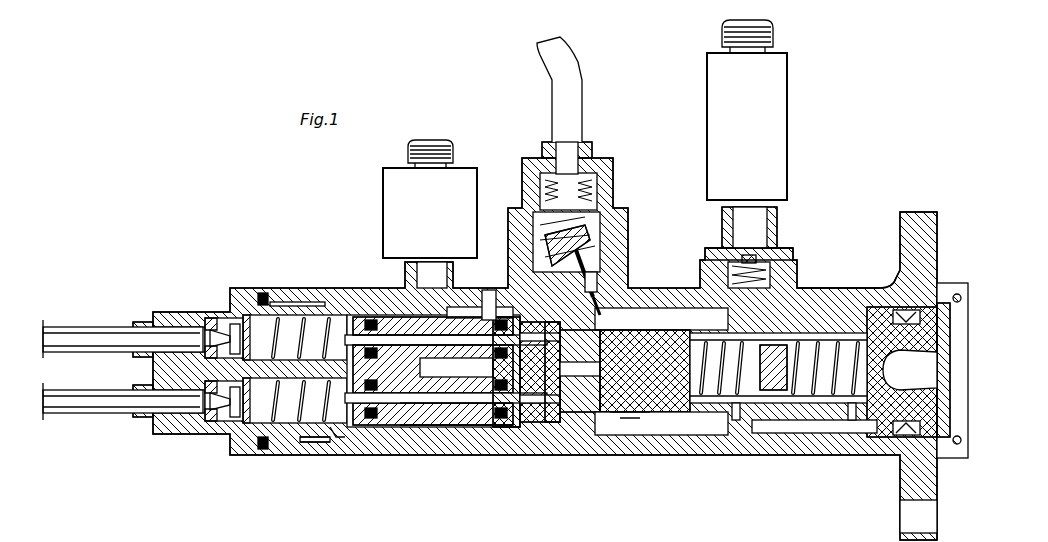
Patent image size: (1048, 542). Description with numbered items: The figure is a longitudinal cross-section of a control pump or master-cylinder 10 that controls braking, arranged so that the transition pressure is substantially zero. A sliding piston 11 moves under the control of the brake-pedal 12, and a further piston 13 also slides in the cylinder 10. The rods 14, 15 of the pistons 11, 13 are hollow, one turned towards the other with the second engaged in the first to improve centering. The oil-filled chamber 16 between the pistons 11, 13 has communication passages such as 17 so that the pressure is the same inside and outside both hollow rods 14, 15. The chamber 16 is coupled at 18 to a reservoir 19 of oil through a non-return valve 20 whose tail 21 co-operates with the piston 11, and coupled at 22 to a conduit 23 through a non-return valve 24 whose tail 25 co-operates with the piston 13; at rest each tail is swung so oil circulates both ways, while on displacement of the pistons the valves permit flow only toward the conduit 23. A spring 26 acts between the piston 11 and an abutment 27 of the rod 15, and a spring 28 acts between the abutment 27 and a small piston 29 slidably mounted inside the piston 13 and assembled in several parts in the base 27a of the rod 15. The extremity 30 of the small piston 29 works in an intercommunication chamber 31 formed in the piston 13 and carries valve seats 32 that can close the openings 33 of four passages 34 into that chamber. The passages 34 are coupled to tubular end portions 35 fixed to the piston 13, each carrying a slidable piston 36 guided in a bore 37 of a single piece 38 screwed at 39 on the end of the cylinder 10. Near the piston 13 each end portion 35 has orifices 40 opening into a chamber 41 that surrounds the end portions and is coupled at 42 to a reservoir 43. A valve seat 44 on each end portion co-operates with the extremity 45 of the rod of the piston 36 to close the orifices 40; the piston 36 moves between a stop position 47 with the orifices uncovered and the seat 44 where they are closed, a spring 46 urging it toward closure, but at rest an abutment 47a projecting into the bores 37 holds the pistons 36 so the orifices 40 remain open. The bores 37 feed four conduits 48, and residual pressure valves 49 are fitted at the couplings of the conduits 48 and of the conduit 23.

The pump or master-cylinder 10 is at (665, 456).
The sliding piston 11 is at (942, 385).
The brake-pedal 12 is at (902, 372).
The further piston 13 is at (543, 456).
The rod of piston 11 14 is at (830, 405).
The rod of piston 13 15 is at (805, 405).
The chamber 16 is at (666, 328).
The communication passage 17 is at (736, 420).
The coupling to reservoir 18 is at (780, 215).
The reservoir of oil 19 is at (777, 113).
The non-return valve 20 is at (775, 264).
The tail of non-return valve 20 21 is at (800, 288).
The coupling to conduit 22 is at (606, 145).
The conduit 23 is at (578, 90).
The non-return valve 24 is at (603, 241).
The tail of non-return valve 24 25 is at (633, 290).
The spring 26 is at (840, 297).
The abutment 27 is at (770, 410).
The base of rod 15 27a is at (670, 293).
The spring 28 is at (712, 403).
The small piston 29 is at (672, 400).
The extremity of small piston 30 is at (615, 410).
The intercommunication chamber 31 is at (661, 423).
The valve seats 32 is at (565, 420).
The openings 33 is at (506, 372).
The passages 34 is at (530, 425).
The tubular end portions 35 is at (470, 425).
The piston 36 is at (388, 422).
The bore 37 is at (323, 440).
The single piece 38 is at (332, 432).
The screw coupling 39 is at (285, 440).
The orifices 40 is at (500, 427).
The chamber 41 is at (480, 313).
The coupling to reservoir 42 is at (405, 276).
The reservoir 43 is at (395, 192).
The valve seat 44 is at (497, 322).
The extremity of rod of piston 36 45 is at (456, 369).
The spring 46 is at (291, 338).
The stop position 47 is at (360, 356).
The abutment 47a is at (428, 378).
The conduits 48 is at (93, 328).
The residual pressure valves 49 is at (214, 325).